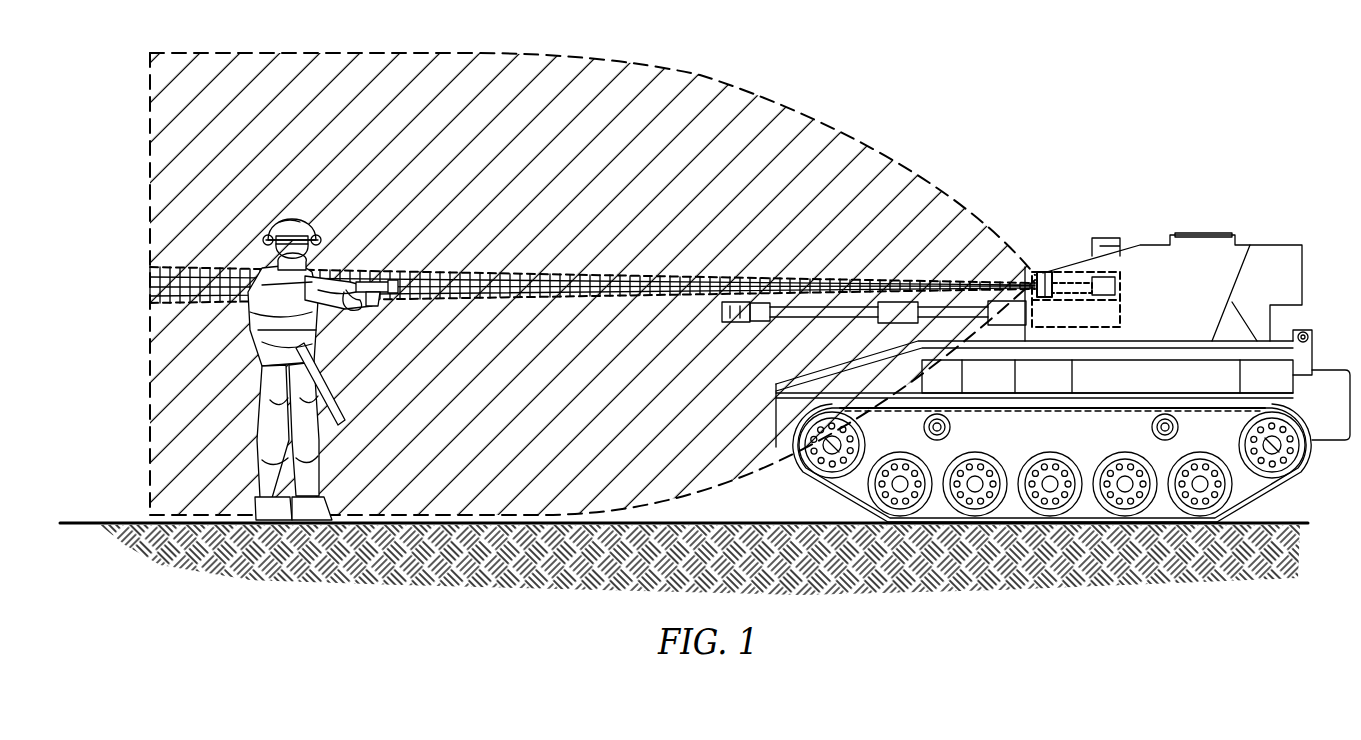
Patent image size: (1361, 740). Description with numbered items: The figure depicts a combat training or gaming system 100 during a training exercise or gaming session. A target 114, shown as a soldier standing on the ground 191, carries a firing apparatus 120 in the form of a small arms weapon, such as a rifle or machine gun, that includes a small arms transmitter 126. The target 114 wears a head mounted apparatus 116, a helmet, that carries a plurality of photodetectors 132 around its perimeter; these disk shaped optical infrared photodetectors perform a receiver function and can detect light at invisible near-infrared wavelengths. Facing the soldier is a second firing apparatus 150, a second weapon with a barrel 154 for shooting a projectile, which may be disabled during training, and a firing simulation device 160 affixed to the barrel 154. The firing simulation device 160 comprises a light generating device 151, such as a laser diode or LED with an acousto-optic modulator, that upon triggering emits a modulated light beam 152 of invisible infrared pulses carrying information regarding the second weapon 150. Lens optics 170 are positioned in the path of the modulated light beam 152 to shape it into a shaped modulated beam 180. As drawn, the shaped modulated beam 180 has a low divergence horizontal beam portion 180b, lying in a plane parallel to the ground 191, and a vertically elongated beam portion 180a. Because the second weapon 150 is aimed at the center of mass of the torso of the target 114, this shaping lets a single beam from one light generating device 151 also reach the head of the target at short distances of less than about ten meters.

The combat training or gaming system 100 is at (1081, 37).
The target 114 is at (442, 349).
The head mounted apparatus 116 is at (325, 218).
The firing apparatus 120 is at (517, 283).
The small arms transmitter 126 is at (400, 294).
The photodetectors 132 is at (263, 243).
The second firing apparatus 150 is at (1036, 309).
The light generating device 151 is at (1118, 287).
The modulated light beam 152 is at (1044, 219).
The barrel 154 is at (1068, 314).
The firing simulation device 160 is at (1084, 212).
The lens optics 170 is at (1037, 276).
The shaped modulated beam 180 is at (592, 273).
The vertically elongated beam portion 180a is at (930, 147).
The low divergence horizontal beam portion 180b is at (540, 234).
The ground 191 is at (684, 560).